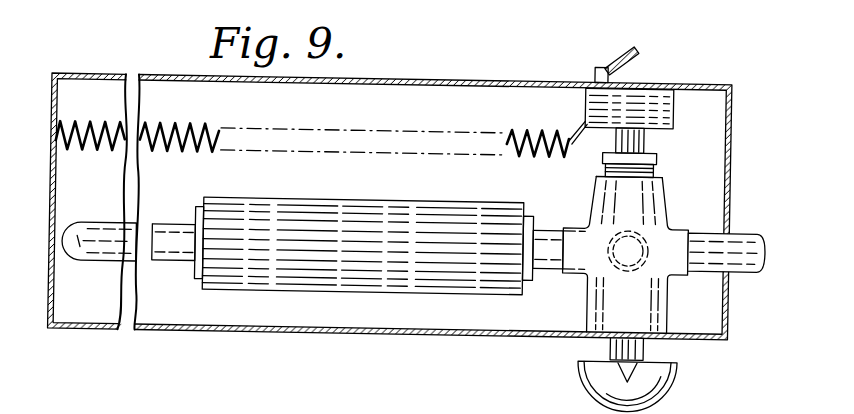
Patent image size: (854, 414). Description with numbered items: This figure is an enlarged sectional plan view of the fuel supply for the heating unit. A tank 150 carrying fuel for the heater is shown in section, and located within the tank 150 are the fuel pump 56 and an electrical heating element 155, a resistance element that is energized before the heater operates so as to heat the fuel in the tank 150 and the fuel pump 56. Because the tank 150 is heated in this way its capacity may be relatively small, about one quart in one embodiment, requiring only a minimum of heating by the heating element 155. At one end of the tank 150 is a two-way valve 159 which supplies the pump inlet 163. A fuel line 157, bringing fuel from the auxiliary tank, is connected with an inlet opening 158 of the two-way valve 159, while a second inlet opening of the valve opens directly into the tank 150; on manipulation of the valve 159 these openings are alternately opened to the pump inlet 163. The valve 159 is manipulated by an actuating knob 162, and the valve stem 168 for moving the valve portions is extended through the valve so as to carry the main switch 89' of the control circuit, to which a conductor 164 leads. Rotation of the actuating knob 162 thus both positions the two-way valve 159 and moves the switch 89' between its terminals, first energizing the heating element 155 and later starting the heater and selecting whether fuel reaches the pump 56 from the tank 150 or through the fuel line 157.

The tank 150 is at (370, 80).
The electrical heating element 155 is at (527, 130).
The conductor 164 is at (612, 62).
The main switch 89' is at (654, 80).
The valve stem 168 is at (642, 137).
The two-way valve 159 is at (660, 196).
The inlet opening 158 is at (684, 226).
The fuel line 157 is at (735, 240).
The fuel pump 56 is at (387, 207).
The pump inlet 163 is at (544, 233).
The actuating knob 162 is at (663, 390).